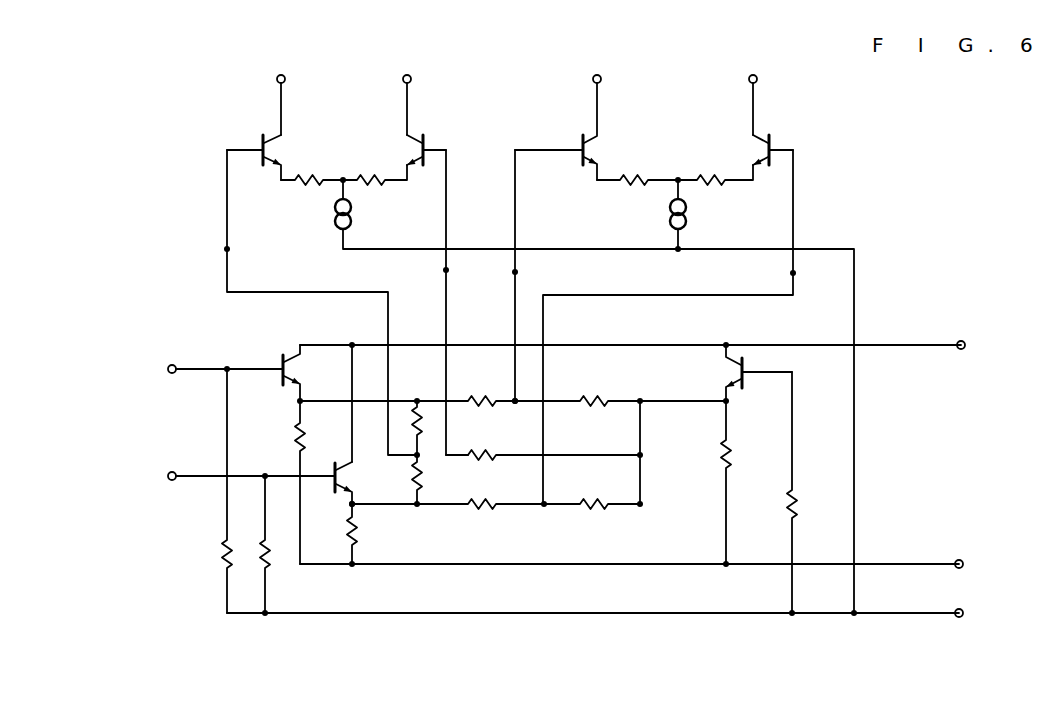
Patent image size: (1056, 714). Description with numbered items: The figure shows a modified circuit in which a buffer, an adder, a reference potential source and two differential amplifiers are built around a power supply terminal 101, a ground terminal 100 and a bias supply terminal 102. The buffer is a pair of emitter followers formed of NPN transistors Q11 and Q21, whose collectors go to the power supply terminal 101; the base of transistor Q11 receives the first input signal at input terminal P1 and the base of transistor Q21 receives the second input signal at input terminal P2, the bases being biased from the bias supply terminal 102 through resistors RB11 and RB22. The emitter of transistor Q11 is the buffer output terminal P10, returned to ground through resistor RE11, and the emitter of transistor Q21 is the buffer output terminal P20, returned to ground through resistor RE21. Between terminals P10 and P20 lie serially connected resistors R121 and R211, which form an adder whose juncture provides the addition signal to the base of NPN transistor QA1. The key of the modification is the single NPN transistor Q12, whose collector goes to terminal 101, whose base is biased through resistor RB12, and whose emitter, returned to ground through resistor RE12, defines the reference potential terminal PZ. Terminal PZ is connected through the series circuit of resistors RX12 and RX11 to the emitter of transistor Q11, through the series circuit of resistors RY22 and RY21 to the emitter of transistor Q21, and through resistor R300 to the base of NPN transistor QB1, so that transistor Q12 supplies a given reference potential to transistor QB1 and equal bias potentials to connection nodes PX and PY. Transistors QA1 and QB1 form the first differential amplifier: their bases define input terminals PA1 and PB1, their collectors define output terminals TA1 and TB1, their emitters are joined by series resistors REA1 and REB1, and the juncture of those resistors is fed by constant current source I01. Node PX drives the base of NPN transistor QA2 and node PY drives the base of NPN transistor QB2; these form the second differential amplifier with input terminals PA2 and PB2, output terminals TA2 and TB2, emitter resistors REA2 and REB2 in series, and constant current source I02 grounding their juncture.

The output terminal of first differential amplifier TA1 is at (280, 90).
The output terminal of first differential amplifier TB1 is at (406, 90).
The output terminal of second differential amplifier TA2 is at (596, 90).
The output terminal of second differential amplifier TB2 is at (751, 90).
The NPN transistor QA1 is at (260, 134).
The NPN transistor QB1 is at (420, 136).
The NPN transistor QA2 is at (587, 133).
The NPN transistor QB2 is at (772, 130).
The resistor REA1 is at (312, 164).
The resistor REB1 is at (375, 164).
The resistor REA2 is at (637, 165).
The resistor REB2 is at (715, 165).
The constant current source I01 is at (352, 209).
The constant current source I02 is at (687, 209).
The input terminal of first differential amplifier PA1 is at (226, 249).
The input terminal of first differential amplifier PB1 is at (444, 270).
The input terminal of second differential amplifier PA2 is at (519, 272).
The input terminal of second differential amplifier PB2 is at (790, 273).
The input terminal P1 is at (210, 370).
The input terminal P2 is at (232, 477).
The NPN transistor Q11 is at (296, 370).
The NPN transistor Q21 is at (344, 478).
The NPN transistor Q12 is at (726, 372).
The output terminal P10 is at (370, 398).
The output terminal P20 is at (385, 508).
The connection node PX is at (513, 406).
The connection node PY is at (546, 508).
The reference potential terminal PZ is at (684, 404).
The resistor RE11 is at (294, 440).
The resistor RE21 is at (358, 540).
The resistor RE12 is at (734, 454).
The resistor RB11 is at (220, 574).
The resistor RB22 is at (272, 560).
The resistor RB12 is at (800, 500).
The resistor R121 is at (413, 410).
The resistor R211 is at (423, 478).
The resistor R300 is at (482, 460).
The resistor RX11 is at (479, 395).
The resistor RX12 is at (594, 406).
The resistor RY21 is at (486, 509).
The resistor RY22 is at (600, 509).
The ground terminal 100 is at (655, 565).
The power supply terminal 101 is at (984, 346).
The bias supply terminal 102 is at (619, 614).